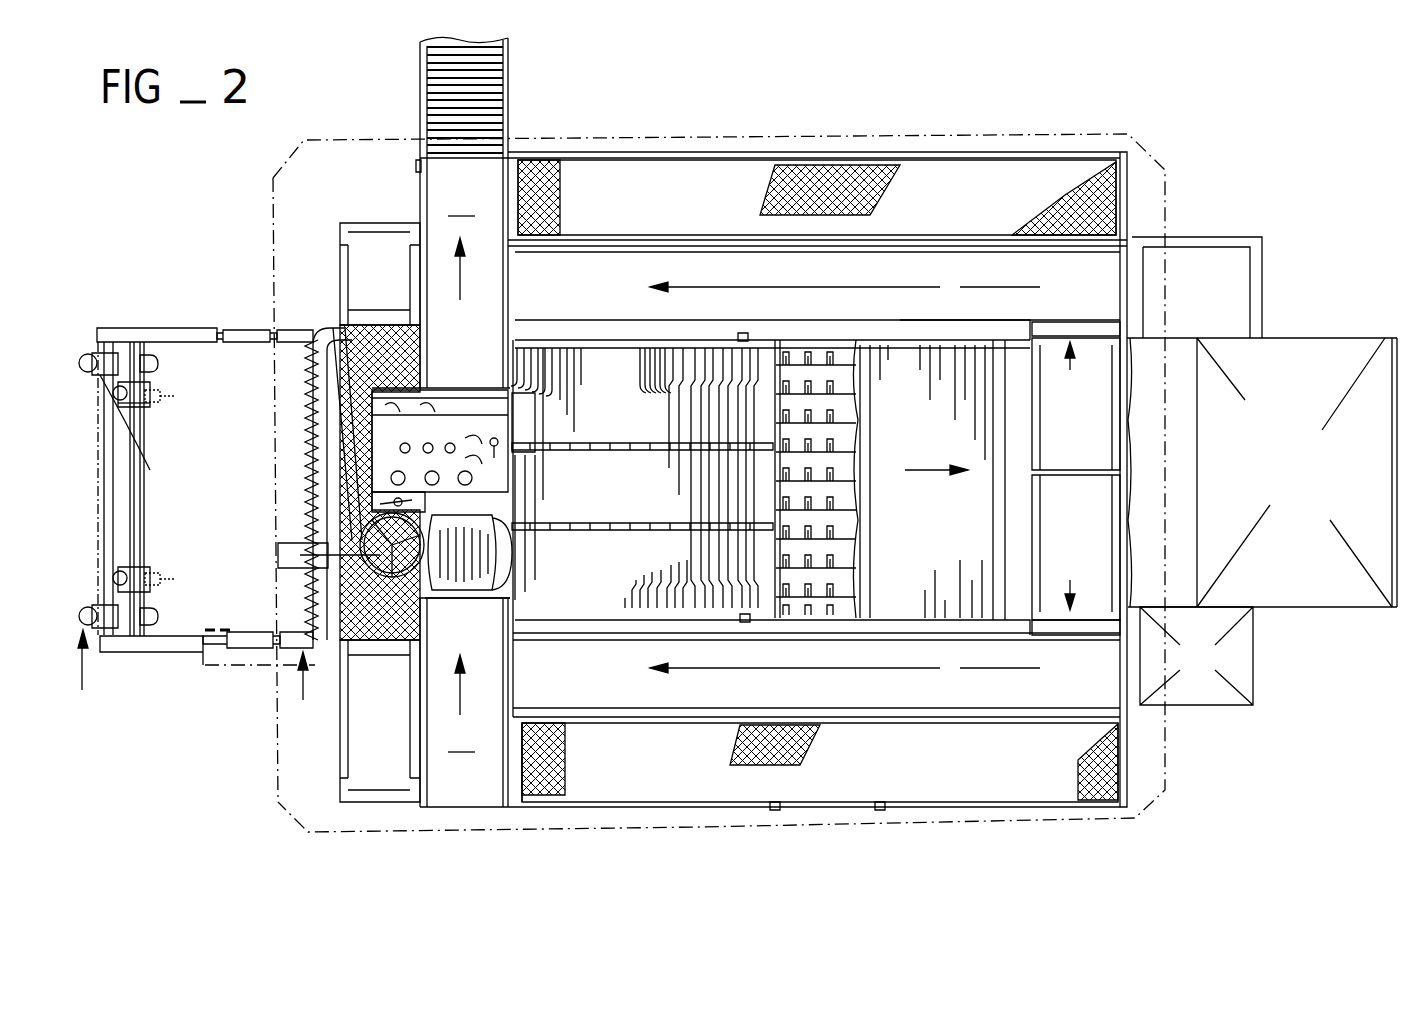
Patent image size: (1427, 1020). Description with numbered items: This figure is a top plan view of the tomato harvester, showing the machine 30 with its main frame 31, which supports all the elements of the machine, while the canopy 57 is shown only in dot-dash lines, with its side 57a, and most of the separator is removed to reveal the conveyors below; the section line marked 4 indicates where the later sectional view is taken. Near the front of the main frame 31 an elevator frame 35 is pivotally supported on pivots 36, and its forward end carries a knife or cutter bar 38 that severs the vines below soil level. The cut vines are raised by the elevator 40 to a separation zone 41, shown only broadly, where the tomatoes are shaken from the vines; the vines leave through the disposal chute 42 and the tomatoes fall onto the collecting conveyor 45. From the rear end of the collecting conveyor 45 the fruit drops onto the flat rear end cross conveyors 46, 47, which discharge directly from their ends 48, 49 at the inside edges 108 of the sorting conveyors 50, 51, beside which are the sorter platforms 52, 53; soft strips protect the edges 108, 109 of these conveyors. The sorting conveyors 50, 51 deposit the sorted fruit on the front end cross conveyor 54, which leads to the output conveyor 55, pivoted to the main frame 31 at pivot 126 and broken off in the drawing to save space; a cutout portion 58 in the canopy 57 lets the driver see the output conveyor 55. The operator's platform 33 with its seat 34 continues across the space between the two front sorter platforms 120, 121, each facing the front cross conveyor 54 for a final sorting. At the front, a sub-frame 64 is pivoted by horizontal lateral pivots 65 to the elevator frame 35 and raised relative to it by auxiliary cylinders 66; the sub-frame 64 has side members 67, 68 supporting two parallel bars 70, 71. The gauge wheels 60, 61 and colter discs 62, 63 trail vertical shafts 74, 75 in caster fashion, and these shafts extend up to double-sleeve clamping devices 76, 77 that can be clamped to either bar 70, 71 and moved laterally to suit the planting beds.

The machine 30 is at (1196, 204).
The main frame 31 is at (866, 620).
The operator's platform 33 is at (414, 378).
The seat 34 is at (468, 536).
The elevator frame 35 is at (598, 340).
The pivots 36 is at (748, 336).
The knife or cutter bar 38 is at (306, 400).
The elevator 40 is at (646, 492).
The separation zone 41 is at (834, 428).
The disposal chute 42 is at (1372, 598).
The collecting conveyor 45 is at (918, 512).
The rear end cross conveyor 46 is at (1082, 557).
The rear end cross conveyor 47 is at (1082, 412).
The end of rear end cross conveyor 48 is at (1100, 632).
The end of rear end cross conveyor 49 is at (1052, 324).
The sorting conveyor 50 is at (882, 684).
The sorting conveyor 51 is at (934, 313).
The sorter platform 52 is at (897, 767).
The sorter platform 53 is at (966, 207).
The front end cross conveyor 54 is at (441, 482).
The output conveyor 55 is at (494, 96).
The canopy 57 is at (874, 130).
The cabinet side wall 57a is at (268, 182).
The cutout portion 58 is at (512, 200).
The gauge wheel 60 is at (162, 614).
The gauge wheel 61 is at (162, 366).
The colter disc 62 is at (176, 579).
The colter disc 63 is at (176, 396).
The sub-frame 64 is at (192, 330).
The horizontal lateral pivots 65 is at (306, 634).
The auxiliary cylinders 66 is at (250, 330).
The side member 67 is at (158, 654).
The side member 68 is at (125, 328).
The front bar 70 is at (108, 524).
The rear bar 71 is at (143, 516).
The vertical shaft 74 is at (96, 682).
The vertical shaft 75 is at (132, 410).
The double-sleeve clamping device 76 is at (92, 352).
The double-sleeve clamping device 77 is at (145, 408).
The inside edge of sorter conveyor 108 is at (950, 322).
The edge of sorter conveyor 109 is at (960, 252).
The sorter platform 120 is at (396, 720).
The sorter platform 121 is at (396, 280).
The pivot 126 is at (417, 165).
The section line 4- 4 is at (193, 694).